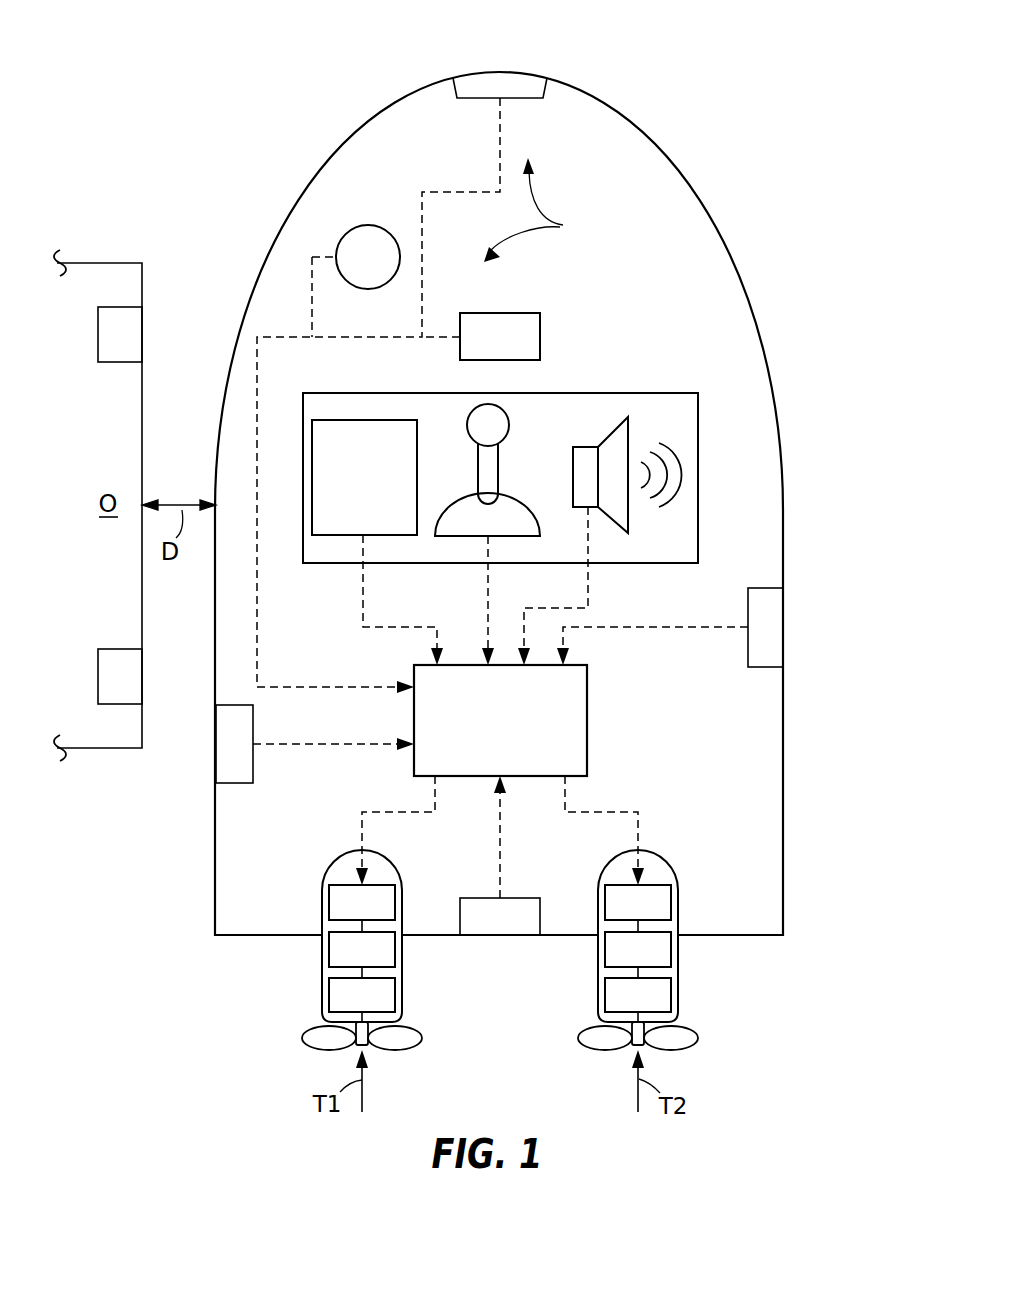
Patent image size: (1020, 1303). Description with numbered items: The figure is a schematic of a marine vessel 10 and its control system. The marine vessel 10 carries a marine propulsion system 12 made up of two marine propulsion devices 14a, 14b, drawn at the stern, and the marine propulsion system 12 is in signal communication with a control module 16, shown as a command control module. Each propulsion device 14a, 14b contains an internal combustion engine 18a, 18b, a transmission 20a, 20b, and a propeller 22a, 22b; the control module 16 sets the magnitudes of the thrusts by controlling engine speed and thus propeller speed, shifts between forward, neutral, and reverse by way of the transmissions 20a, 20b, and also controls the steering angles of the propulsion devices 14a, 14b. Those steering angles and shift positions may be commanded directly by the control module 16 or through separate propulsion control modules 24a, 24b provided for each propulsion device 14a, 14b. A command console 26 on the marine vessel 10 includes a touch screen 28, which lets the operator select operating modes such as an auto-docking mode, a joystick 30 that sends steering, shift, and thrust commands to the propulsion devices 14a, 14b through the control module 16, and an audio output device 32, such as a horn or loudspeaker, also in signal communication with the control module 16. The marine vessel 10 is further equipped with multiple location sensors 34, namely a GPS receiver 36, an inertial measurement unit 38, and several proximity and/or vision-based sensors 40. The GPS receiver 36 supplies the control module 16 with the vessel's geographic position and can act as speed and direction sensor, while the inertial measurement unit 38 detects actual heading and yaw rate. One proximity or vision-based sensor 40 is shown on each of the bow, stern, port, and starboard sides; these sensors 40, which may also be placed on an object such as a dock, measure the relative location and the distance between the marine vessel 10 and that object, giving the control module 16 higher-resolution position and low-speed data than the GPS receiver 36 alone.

The marine vessel 10 is at (703, 205).
The marine propulsion system 12 is at (658, 738).
The marine propulsion device 14a is at (322, 900).
The marine propulsion device 14b is at (678, 900).
The control module 16 is at (588, 702).
The internal combustion engine 18a is at (329, 945).
The internal combustion engine 18b is at (671, 945).
The transmission 20a is at (329, 990).
The transmission 20b is at (671, 990).
The propeller 22a is at (316, 1035).
The propeller 22b is at (684, 1035).
The propulsion control module 24a is at (347, 885).
The propulsion control module 24b is at (653, 885).
The command console 26 is at (442, 412).
The touch screen 28 is at (340, 418).
The joystick 30 is at (502, 457).
The audio output device 32 is at (630, 438).
The location sensors 34 is at (539, 210).
The global positioning system receiver 36 is at (388, 226).
The inertial measurement unit 38 is at (541, 328).
The proximity and/or vision-based sensors 40 is at (523, 80).